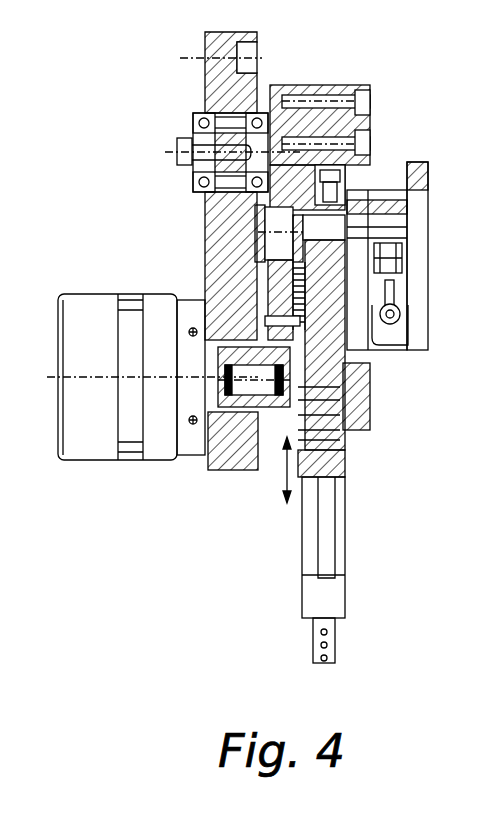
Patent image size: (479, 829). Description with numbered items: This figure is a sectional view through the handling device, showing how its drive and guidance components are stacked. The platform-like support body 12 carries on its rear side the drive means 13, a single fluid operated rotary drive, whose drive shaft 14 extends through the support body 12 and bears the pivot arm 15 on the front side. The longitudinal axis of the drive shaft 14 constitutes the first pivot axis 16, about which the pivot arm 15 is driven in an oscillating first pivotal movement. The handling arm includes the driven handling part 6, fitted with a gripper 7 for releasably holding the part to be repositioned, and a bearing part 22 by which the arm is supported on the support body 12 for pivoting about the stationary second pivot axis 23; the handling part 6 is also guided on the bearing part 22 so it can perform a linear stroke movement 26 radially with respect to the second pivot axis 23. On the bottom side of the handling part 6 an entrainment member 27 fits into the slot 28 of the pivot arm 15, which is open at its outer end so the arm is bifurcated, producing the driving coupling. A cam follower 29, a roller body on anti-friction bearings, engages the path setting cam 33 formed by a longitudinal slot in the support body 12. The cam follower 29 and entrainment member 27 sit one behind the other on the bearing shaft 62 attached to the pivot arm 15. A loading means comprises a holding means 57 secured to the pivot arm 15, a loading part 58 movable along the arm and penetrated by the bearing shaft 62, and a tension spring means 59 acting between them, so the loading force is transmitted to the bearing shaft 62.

The handling part 6 is at (343, 468).
The gripper 7 is at (335, 598).
The support body 12 is at (217, 84).
The drive means 13 is at (95, 455).
The drive shaft 14 is at (235, 385).
The pivot arm 15 is at (280, 263).
The first pivot axis 16 is at (246, 470).
The bearing part 22 is at (318, 120).
The second pivot axis 23 is at (175, 148).
The linear stroke movement 26 is at (290, 465).
The entrainment member 27 is at (258, 248).
The slot 28 is at (385, 248).
The cam follower 29 is at (235, 223).
The path setting cam 33 is at (212, 208).
The holding means 57 is at (365, 398).
The loading part 58 is at (350, 195).
The tension spring means 59 is at (365, 297).
The bearing shaft 62 is at (403, 205).